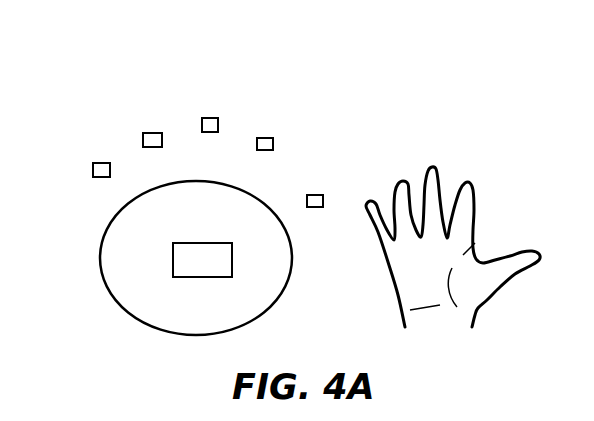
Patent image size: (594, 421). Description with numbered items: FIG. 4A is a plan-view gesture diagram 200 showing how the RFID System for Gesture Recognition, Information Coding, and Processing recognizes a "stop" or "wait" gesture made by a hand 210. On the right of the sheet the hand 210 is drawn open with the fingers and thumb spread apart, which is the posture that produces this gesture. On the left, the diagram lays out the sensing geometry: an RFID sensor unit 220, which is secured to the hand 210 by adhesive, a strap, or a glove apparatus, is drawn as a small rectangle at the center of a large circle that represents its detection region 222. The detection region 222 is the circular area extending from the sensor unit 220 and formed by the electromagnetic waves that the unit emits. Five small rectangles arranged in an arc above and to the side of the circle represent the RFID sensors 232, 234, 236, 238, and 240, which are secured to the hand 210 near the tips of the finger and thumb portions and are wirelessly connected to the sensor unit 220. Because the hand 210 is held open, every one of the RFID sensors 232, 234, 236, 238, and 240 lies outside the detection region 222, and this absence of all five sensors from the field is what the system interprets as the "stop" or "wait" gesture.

The gesture diagram 200 is at (165, 111).
The hand 210 is at (477, 240).
The RFID sensor unit 220 is at (203, 253).
The detection region 222 is at (265, 298).
The RFID sensor 232 is at (265, 138).
The RFID sensor 234 is at (210, 118).
The RFID sensor 236 is at (143, 137).
The RFID sensor 238 is at (97, 177).
The RFID sensor 240 is at (315, 195).